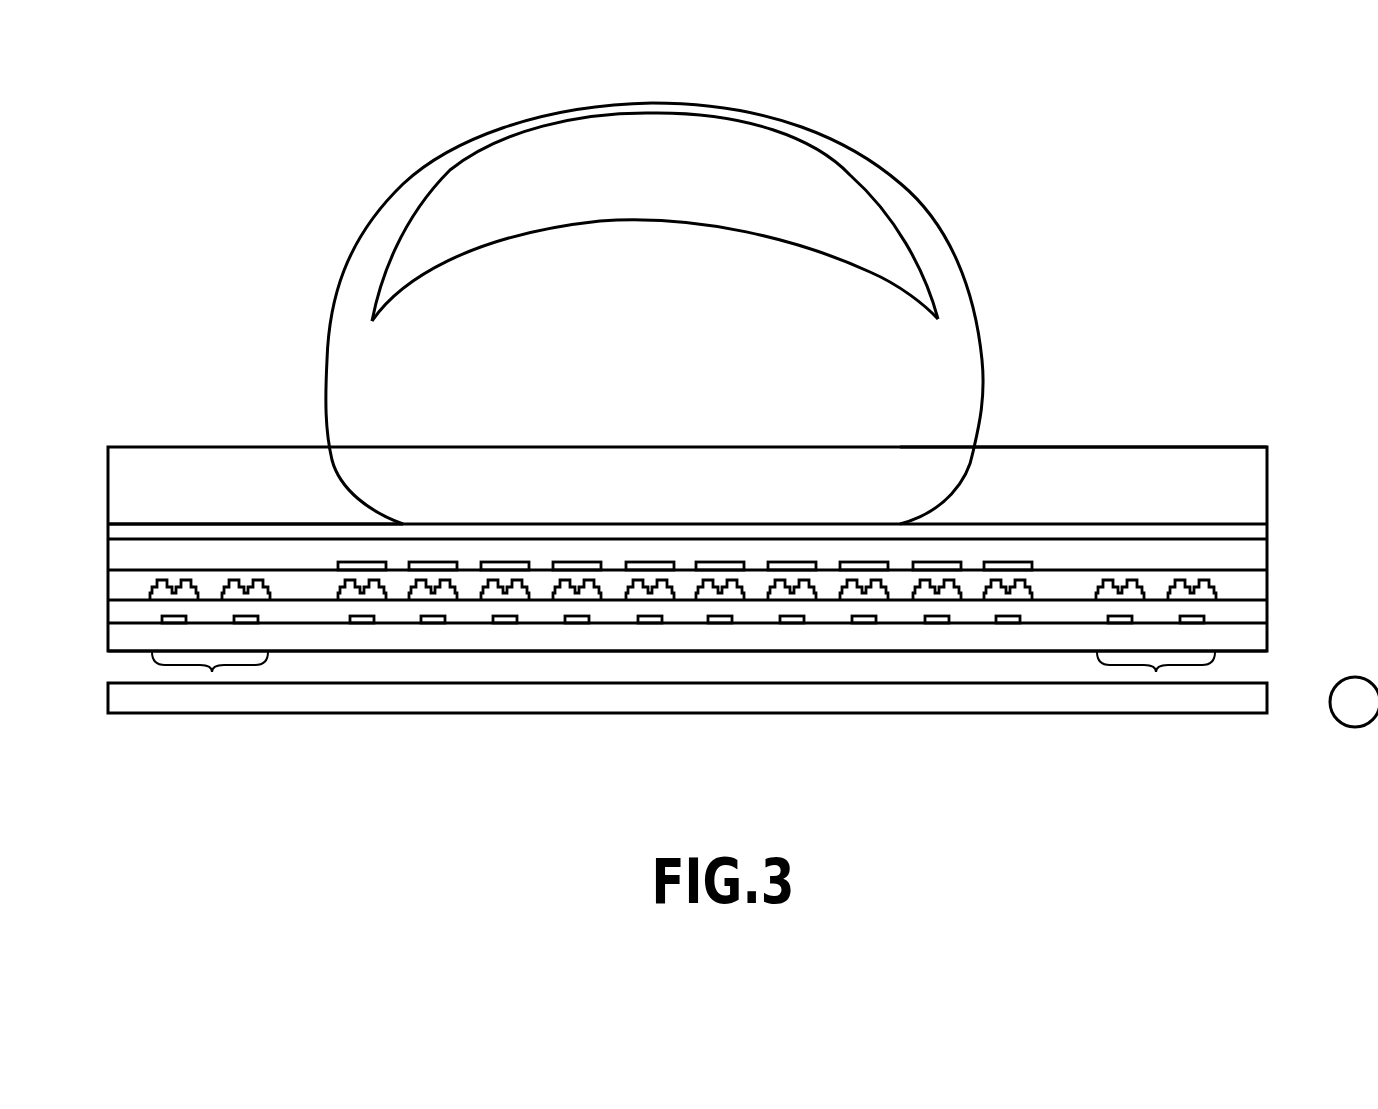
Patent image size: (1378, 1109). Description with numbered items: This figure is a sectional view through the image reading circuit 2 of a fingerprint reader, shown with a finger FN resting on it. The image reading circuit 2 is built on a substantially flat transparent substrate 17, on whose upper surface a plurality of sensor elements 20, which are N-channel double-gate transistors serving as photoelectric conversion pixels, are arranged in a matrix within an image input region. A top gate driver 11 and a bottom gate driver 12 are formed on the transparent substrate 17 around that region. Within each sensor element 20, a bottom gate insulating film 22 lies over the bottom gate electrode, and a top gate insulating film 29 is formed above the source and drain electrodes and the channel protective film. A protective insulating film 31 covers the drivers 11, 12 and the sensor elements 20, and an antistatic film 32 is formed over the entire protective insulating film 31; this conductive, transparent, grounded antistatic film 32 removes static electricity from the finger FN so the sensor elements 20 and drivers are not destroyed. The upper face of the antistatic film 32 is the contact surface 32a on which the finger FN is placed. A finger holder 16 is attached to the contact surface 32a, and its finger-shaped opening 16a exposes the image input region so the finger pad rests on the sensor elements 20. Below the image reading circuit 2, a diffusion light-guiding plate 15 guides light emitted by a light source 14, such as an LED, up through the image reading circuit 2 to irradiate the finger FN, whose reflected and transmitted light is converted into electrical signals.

The finger FN is at (405, 204).
The image reading circuit 2 is at (1272, 518).
The finger holder 16 is at (1090, 462).
The opening 16a is at (963, 470).
The antistatic film 32 is at (125, 532).
The contact surface 32a is at (236, 524).
The protective insulating film 31 is at (1247, 556).
The top gate insulating film 29 is at (1247, 586).
The bottom gate insulating film 22 is at (1247, 614).
The transparent substrate 17 is at (1247, 641).
The diffusion light-guiding plate 15 is at (293, 698).
The sensor elements 20 is at (369, 600).
The top gate driver 11 is at (212, 672).
The bottom gate driver 12 is at (1156, 672).
The light source 14 is at (1352, 677).